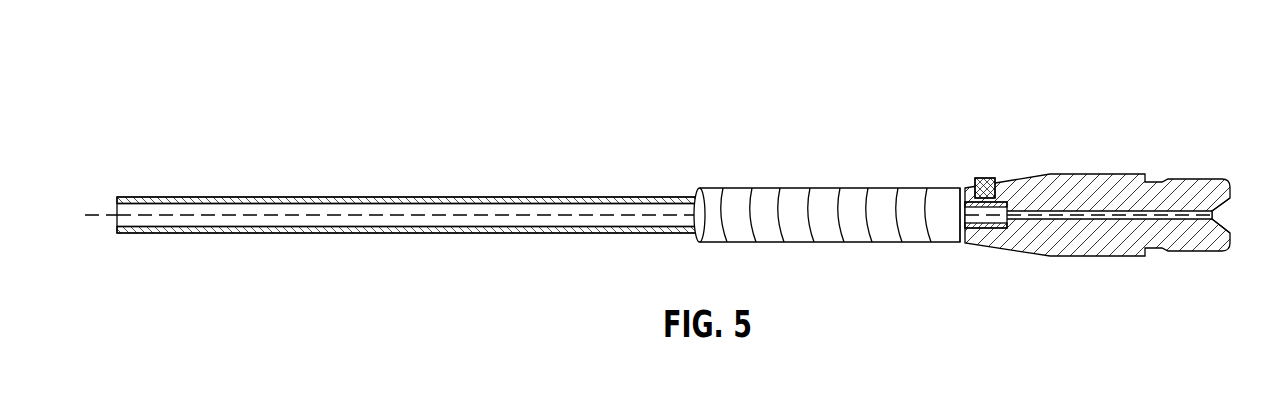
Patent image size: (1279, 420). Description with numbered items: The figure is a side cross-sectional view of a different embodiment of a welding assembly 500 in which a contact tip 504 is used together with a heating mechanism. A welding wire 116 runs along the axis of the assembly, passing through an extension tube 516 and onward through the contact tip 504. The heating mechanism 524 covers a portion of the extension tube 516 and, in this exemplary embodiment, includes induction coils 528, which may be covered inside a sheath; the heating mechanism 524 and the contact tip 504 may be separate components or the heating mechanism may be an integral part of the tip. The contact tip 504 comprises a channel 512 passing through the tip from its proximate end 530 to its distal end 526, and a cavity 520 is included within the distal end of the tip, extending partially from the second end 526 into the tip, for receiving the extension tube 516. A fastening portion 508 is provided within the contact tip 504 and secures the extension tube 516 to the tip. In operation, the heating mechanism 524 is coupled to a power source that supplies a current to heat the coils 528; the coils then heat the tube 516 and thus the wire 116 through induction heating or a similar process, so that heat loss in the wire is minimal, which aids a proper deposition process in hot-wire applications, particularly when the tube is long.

The welding assembly 500 is at (1135, 72).
The welding wire 116 is at (105, 216).
The extension tube 516 is at (577, 234).
The heating mechanism 524 is at (827, 185).
The induction coils 528 is at (787, 212).
The distal end 526 is at (948, 188).
The fastening portion 508 is at (985, 178).
The contact tip 504 is at (1117, 212).
The proximate end 530 is at (1231, 202).
The cavity 520 is at (983, 212).
The channel 512 is at (1100, 221).